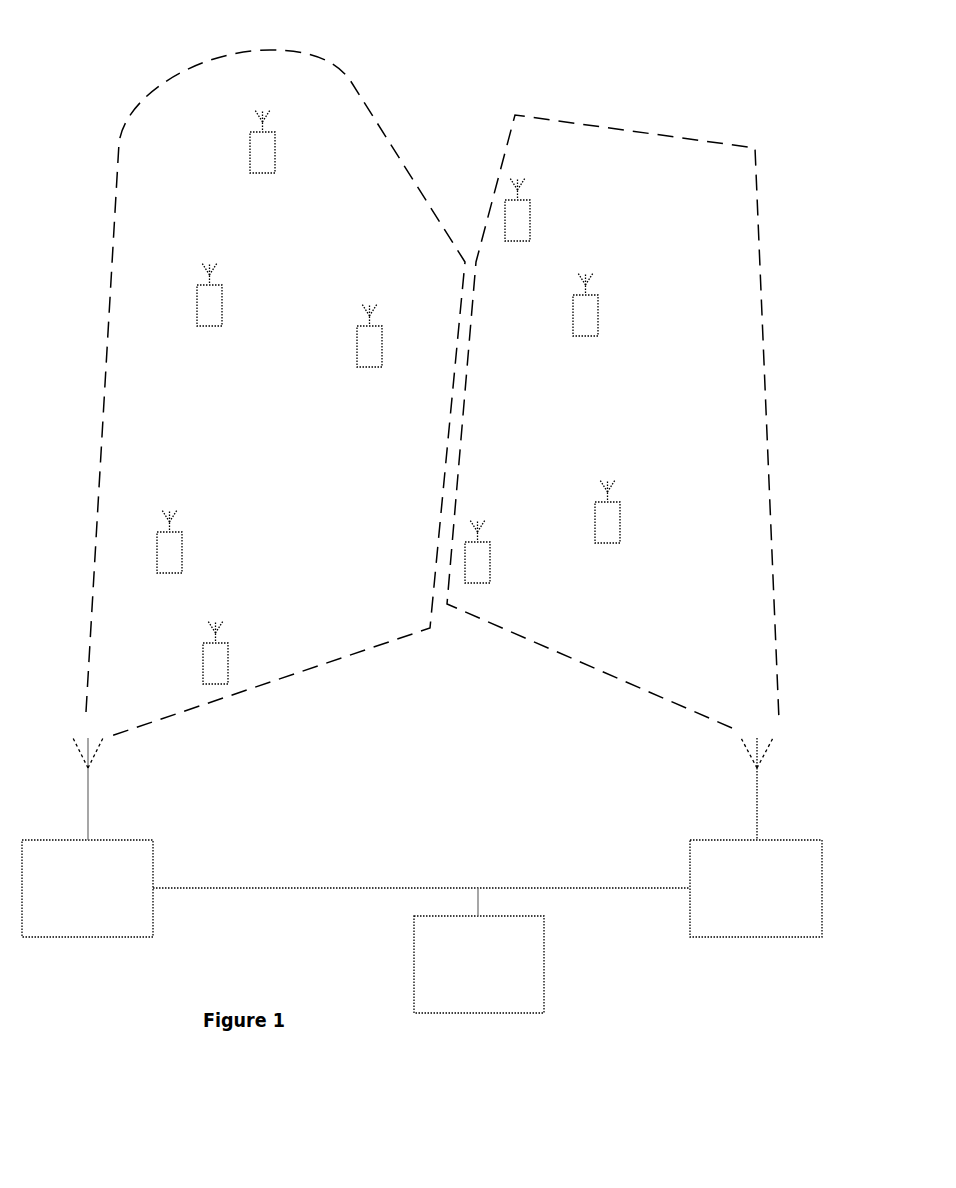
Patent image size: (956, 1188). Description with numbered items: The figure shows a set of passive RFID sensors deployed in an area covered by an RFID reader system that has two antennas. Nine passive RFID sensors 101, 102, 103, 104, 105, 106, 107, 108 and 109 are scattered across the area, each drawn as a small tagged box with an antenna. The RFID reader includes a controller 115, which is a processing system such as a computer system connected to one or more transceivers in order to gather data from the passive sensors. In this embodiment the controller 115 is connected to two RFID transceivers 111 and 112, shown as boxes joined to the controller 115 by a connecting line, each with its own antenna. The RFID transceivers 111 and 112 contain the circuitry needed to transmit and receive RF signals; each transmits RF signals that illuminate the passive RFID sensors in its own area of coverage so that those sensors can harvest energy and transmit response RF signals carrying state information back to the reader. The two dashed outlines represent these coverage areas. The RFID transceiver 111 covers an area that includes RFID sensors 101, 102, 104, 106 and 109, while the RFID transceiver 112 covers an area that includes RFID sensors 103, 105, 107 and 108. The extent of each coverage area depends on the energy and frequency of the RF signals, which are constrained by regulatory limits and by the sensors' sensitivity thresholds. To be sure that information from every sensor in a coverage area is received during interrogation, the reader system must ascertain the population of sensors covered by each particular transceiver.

The passive RFID sensor 101 is at (277, 140).
The passive RFID sensor 102 is at (224, 292).
The passive RFID sensor 103 is at (532, 208).
The passive RFID sensor 104 is at (383, 333).
The passive RFID sensor 105 is at (600, 302).
The passive RFID sensor 106 is at (184, 540).
The passive RFID sensor 107 is at (492, 552).
The passive RFID sensor 108 is at (622, 510).
The passive RFID sensor 109 is at (230, 652).
The RFID transceiver 111 is at (118, 840).
The RFID transceiver 112 is at (786, 840).
The controller 115 is at (544, 943).